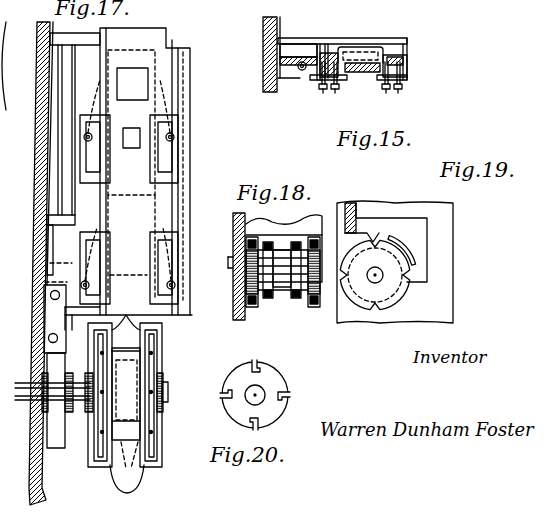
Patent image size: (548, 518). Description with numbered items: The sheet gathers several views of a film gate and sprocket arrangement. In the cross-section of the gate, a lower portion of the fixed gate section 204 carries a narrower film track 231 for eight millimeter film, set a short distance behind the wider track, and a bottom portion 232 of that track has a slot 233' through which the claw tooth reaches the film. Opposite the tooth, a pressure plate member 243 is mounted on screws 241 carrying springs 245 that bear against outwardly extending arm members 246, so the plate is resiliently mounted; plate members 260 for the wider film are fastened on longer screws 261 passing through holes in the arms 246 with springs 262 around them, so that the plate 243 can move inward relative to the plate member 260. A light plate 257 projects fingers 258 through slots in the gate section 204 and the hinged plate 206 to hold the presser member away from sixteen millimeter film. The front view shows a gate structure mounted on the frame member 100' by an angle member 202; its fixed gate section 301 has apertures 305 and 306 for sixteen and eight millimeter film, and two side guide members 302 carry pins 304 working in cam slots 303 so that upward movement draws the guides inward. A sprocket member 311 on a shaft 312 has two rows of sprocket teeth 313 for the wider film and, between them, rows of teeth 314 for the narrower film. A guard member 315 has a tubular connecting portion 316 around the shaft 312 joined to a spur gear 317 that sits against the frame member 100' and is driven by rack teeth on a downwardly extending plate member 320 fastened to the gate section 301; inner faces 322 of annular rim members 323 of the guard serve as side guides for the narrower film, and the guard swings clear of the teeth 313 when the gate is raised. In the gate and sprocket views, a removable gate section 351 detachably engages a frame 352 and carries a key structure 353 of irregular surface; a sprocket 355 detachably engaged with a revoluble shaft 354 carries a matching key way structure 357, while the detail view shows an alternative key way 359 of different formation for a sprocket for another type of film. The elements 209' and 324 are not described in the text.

In FIG. 17, the frame member 100' is at (28, 263).
In FIG. 17, the angle member 202 is at (62, 105).
In FIG. 15, the fixed gate section 204 is at (407, 63).
In FIG. 15, the hinged plate 206 is at (408, 68).
In FIG. 15, the base plate 209' is at (268, 54).
In FIG. 15, the film track 231 is at (360, 52).
In FIG. 15, the bottom portion 232 is at (343, 55).
In FIG. 15, the slot 233' is at (337, 37).
In FIG. 15, the screw 241 is at (402, 18).
In FIG. 15, the pressure plate member 243 is at (381, 82).
In FIG. 15, the spring 245 is at (334, 80).
In FIG. 15, the arm member 246 is at (409, 79).
In FIG. 15, the light plate 257 is at (375, 43).
In FIG. 15, the finger 258 is at (300, 70).
In FIG. 15, the plate member 260 is at (390, 52).
In FIG. 15, the screw 261 is at (337, 88).
In FIG. 15, the spring 262 is at (350, 70).
In FIG. 17, the fixed gate section 301 is at (182, 308).
In FIG. 17, the side guide member 302 is at (88, 72).
In FIG. 17, the cam slot 303 is at (62, 107).
In FIG. 17, the pin 304 is at (80, 143).
In FIG. 17, the aperture 305 is at (145, 75).
In FIG. 17, the aperture 306 is at (134, 128).
In FIG. 17, the sprocket member 311 is at (163, 451).
In FIG. 17, the shaft 312 is at (168, 395).
In FIG. 17, the sprocket teeth 313 is at (128, 473).
In FIG. 17, the teeth 314 is at (129, 416).
In FIG. 17, the guard member 315 is at (162, 358).
In FIG. 17, the tubular connecting portion 316 is at (83, 411).
In FIG. 17, the spur gear 317 is at (76, 379).
In FIG. 17, the plate member 320 is at (56, 448).
In FIG. 17, the inner face 322 is at (129, 313).
In FIG. 17, the annular rim member 323 is at (163, 336).
In FIG. 17, the pin 324 is at (118, 345).
In FIG. 19, the removable gate section 351 is at (380, 216).
In FIG. 18, the frame 352 is at (245, 320).
In FIG. 18, the key structure 353 is at (254, 222).
In FIG. 19, the key structure 353 is at (422, 242).
In FIG. 19, the revoluble shaft 354 is at (383, 275).
In FIG. 18, the sprocket 355 is at (295, 298).
In FIG. 19, the sprocket 355 is at (360, 303).
In FIG. 18, the key way structure 357 is at (257, 306).
In FIG. 19, the key way structure 357 is at (398, 297).
In FIG. 20, the key way 359 is at (275, 380).